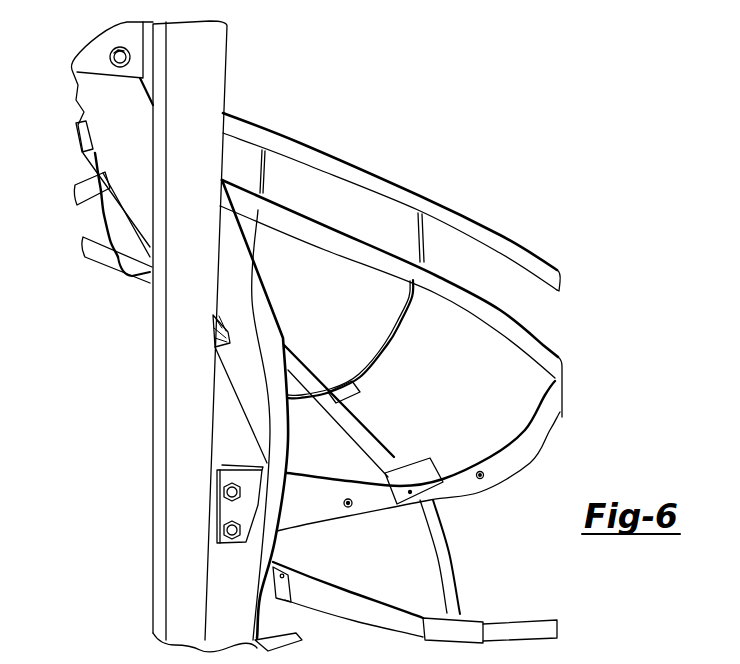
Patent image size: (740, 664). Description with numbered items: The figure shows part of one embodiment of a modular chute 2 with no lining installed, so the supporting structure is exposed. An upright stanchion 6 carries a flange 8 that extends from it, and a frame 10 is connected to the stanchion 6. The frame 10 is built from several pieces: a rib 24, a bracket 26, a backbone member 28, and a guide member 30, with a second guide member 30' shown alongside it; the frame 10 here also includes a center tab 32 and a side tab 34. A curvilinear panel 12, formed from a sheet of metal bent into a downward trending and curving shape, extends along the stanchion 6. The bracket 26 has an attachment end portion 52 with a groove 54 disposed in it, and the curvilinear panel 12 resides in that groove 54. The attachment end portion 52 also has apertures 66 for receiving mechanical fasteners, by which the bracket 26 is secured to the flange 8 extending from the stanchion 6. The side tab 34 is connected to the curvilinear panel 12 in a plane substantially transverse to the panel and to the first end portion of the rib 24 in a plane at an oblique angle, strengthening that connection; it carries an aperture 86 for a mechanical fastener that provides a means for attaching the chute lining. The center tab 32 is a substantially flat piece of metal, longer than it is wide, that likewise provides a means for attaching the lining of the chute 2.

The modular chute 2 is at (540, 163).
The stanchion 6 is at (193, 174).
The flange 8 is at (100, 58).
The frame 10 is at (407, 193).
The curvilinear panel 12 is at (122, 119).
The rib 24 is at (394, 347).
The bracket 26 is at (548, 422).
The backbone member 28 is at (392, 453).
The guide member 30 is at (391, 212).
The second upper rail 30' is at (391, 298).
The center tab 32 is at (443, 487).
The side tab 34 is at (292, 600).
The attachment end portion 52 is at (228, 517).
The groove 54 is at (267, 463).
The apertures 66 is at (217, 465).
The aperture 86 is at (277, 570).